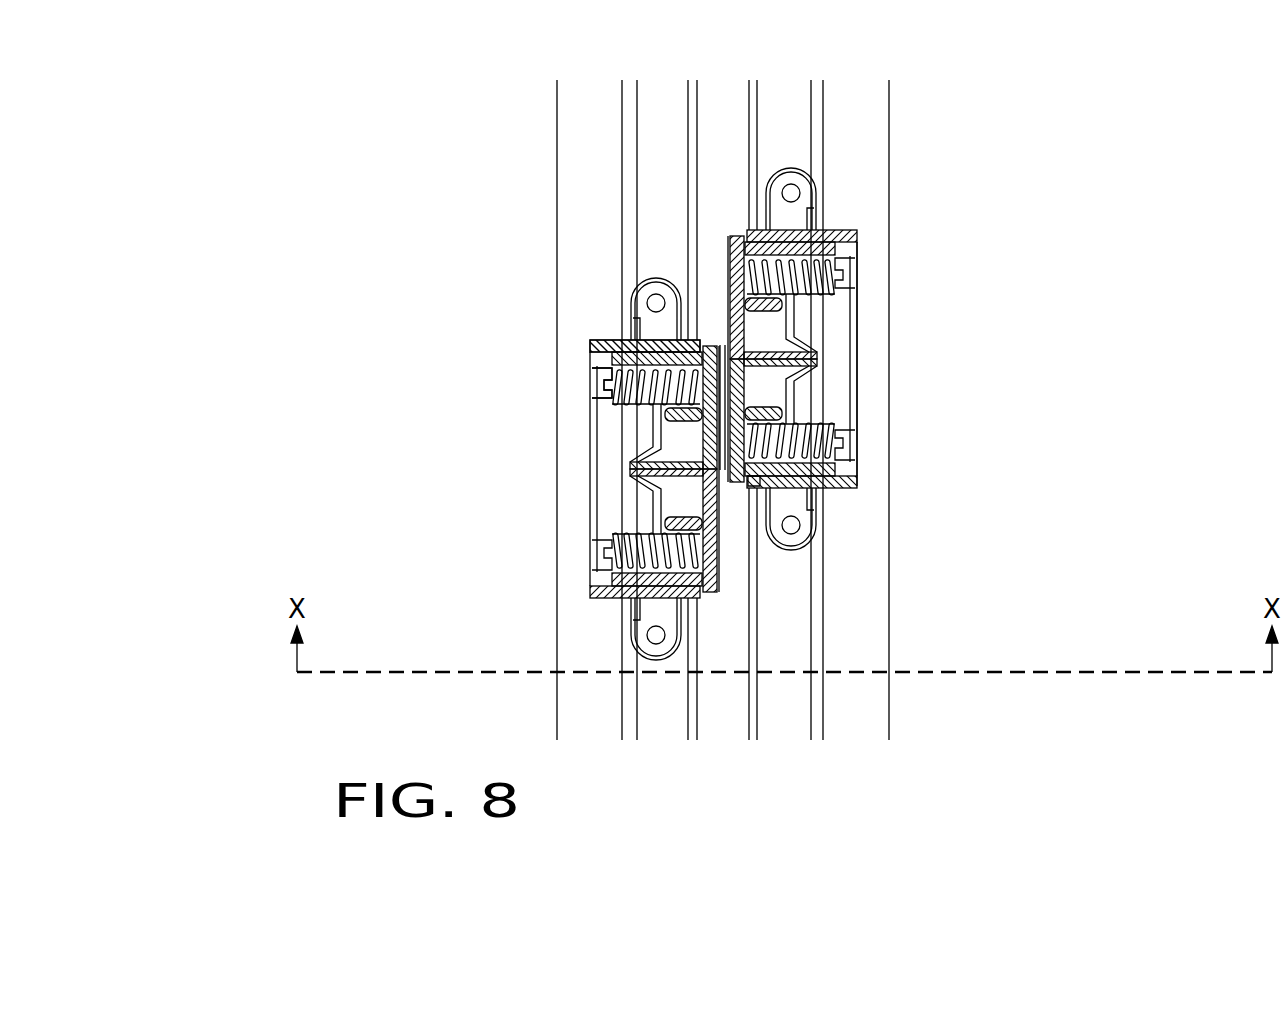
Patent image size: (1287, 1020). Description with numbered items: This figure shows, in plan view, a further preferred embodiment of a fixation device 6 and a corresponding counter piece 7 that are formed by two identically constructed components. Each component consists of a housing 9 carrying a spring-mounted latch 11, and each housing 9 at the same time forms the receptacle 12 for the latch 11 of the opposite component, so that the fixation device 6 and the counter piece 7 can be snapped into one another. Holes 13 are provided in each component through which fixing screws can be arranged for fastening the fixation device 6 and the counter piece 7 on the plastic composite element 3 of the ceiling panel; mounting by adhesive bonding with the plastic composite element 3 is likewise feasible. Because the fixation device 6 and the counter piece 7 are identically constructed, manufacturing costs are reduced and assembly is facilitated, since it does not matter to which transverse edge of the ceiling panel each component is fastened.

The plastic composite element 3 is at (448, 255).
The fixation device 6 is at (855, 437).
The counter piece 7 is at (588, 358).
The housing 9 is at (603, 498).
The latch 11 is at (592, 375).
The receptacle 12 is at (728, 418).
The holes 13 is at (795, 187).